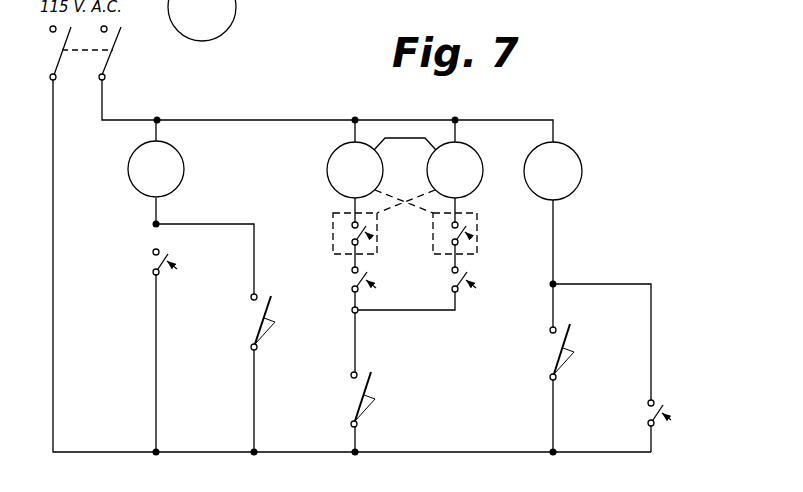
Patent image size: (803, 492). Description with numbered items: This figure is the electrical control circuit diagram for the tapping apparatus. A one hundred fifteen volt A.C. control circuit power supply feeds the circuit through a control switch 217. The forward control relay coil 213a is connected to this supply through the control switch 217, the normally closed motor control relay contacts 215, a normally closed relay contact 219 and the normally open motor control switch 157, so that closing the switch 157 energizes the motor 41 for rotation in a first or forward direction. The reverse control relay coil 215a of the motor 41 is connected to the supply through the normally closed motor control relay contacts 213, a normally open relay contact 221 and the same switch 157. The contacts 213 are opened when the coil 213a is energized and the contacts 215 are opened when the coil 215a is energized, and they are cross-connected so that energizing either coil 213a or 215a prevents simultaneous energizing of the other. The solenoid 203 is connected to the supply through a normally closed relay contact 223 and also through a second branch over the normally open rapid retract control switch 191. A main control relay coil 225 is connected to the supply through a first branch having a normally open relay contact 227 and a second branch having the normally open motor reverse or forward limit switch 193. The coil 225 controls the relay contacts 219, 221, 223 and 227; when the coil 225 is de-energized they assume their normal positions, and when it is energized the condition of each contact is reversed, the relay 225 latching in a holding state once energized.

The motor 41 is at (228, 6).
The control switch 217 is at (124, 68).
The solenoid 203 is at (174, 155).
The forward control relay coil 213a is at (331, 151).
The reverse control relay coil 215a is at (478, 151).
The motor control relay contacts 215 is at (331, 220).
The motor control relay contacts 213 is at (479, 225).
The relay contact 223 is at (152, 259).
The relay contact 219 is at (351, 273).
The relay contact 221 is at (459, 273).
The relay contact 227 is at (665, 404).
The motor control switch 157 is at (358, 400).
The rapid retract control switch 191 is at (258, 327).
The motor reverse or forward limit switch 193 is at (556, 354).
The main control relay coil 225 is at (580, 170).